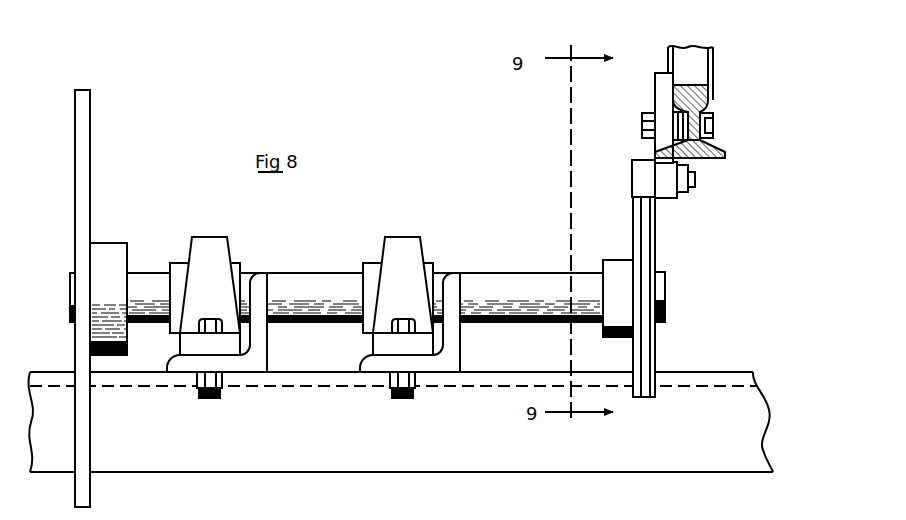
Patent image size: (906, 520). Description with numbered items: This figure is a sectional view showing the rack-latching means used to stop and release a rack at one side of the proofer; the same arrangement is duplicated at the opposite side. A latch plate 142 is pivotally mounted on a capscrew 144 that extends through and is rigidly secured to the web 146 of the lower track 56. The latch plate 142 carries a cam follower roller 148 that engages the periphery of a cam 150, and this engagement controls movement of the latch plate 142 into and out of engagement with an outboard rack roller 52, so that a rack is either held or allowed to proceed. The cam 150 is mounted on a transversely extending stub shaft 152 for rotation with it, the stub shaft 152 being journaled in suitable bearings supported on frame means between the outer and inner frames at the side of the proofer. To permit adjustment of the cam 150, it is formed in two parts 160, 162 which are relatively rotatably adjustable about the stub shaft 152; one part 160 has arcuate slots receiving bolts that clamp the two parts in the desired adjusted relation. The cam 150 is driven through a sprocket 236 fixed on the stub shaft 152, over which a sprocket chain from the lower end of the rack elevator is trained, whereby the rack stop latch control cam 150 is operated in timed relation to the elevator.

The outboard rack roller 52 is at (714, 70).
The lower track 56 is at (712, 103).
The latch plate 142 is at (655, 90).
The capscrew 144 is at (642, 128).
The web 146 is at (713, 140).
The cam follower roller 148 is at (632, 180).
The cam 150 is at (659, 215).
The stub shaft 152 is at (303, 255).
The cam part 160 is at (633, 213).
The cam part 162 is at (656, 247).
The sprocket 236 is at (93, 242).